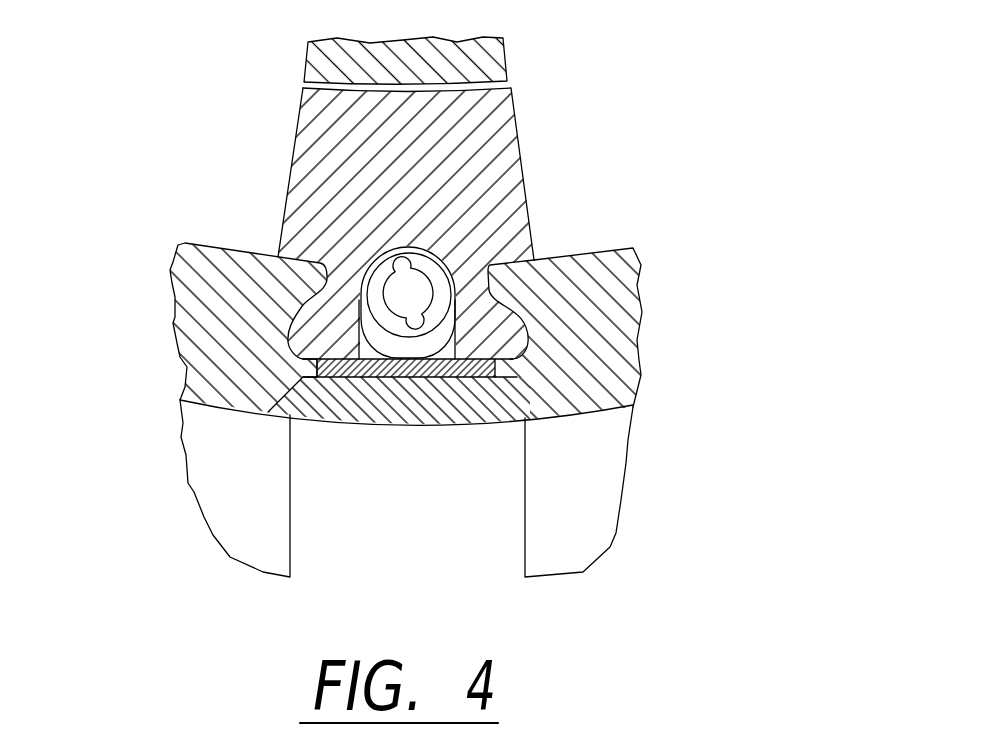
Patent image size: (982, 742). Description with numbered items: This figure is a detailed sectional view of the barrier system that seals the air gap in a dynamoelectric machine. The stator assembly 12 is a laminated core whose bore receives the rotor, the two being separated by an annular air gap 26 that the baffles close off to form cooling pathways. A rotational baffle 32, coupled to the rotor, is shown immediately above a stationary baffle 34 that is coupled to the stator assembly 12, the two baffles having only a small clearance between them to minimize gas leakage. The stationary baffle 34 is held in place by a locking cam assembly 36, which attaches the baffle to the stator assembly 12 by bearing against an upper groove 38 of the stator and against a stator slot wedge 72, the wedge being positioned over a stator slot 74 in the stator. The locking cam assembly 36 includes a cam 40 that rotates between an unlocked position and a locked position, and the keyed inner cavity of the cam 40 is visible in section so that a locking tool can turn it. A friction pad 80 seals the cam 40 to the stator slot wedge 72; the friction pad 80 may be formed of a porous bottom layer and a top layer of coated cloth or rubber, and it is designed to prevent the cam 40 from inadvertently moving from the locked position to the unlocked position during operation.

The stator assembly 12 is at (217, 463).
The annular air gap 26 is at (500, 82).
The rotational baffle 32 is at (505, 59).
The stationary baffle 34 is at (520, 150).
The locking cam assembly 36 is at (545, 202).
The upper groove 38 is at (552, 367).
The cam 40 is at (443, 325).
The stator slot wedge 72 is at (297, 400).
The stator slot 74 is at (393, 482).
The friction pad 80 is at (180, 243).